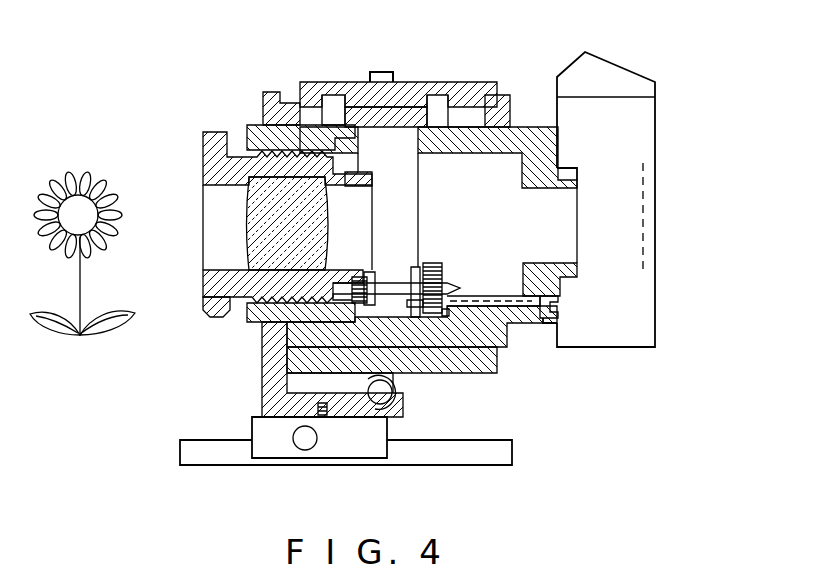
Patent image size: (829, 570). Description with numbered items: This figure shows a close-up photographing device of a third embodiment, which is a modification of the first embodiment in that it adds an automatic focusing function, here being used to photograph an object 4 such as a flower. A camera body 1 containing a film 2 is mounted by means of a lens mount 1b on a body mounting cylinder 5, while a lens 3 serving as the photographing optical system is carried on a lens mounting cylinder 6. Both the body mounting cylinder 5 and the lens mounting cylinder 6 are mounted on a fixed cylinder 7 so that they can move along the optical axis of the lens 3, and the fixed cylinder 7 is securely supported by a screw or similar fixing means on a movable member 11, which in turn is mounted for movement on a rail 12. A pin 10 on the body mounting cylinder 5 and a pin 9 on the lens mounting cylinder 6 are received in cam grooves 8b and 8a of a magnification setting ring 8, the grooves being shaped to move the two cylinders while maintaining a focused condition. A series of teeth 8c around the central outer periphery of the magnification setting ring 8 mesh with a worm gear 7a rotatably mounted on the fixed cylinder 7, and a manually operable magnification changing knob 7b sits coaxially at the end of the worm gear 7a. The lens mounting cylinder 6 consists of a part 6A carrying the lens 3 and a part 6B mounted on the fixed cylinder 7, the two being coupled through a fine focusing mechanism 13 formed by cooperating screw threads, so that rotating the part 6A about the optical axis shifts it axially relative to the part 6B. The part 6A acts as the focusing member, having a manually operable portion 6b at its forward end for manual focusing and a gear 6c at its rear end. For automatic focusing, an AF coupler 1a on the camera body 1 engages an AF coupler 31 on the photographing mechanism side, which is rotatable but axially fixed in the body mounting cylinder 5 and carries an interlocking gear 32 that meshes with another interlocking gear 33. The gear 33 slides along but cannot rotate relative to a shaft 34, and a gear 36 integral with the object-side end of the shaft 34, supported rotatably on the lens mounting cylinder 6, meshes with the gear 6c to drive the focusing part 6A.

The camera body 1 is at (627, 82).
The AF coupler 1a is at (556, 305).
The lens mount 1b is at (560, 174).
The film 2 is at (647, 250).
The lens 3 is at (249, 215).
The object (flower) 4 is at (87, 177).
The body mounting cylinder 5 is at (473, 153).
The lens mounting cylinder 6 is at (261, 170).
The part of lens mounting cylinder 6A is at (213, 135).
The part of lens mounting cylinder 6B is at (282, 189).
The manually operable portion 6b is at (210, 313).
The gear 6c is at (352, 173).
The fixed cylinder 7 is at (262, 385).
The worm gear 7a is at (392, 392).
The magnification changing knob 7b is at (405, 396).
The magnification setting ring 8 is at (405, 84).
The cam groove 8a is at (350, 105).
The cam groove 8b is at (452, 100).
The teeth 8c is at (382, 72).
The pin 9 is at (331, 95).
The pin 10 is at (440, 100).
The movable member 11 is at (330, 457).
The rail 12 is at (476, 464).
The fine focusing mechanism 13 is at (278, 98).
The AF coupler 31 is at (543, 318).
The interlocking gear 32 is at (463, 300).
The interlocking gear 33 is at (430, 262).
The shaft 34 is at (397, 287).
The gear 36 is at (367, 305).